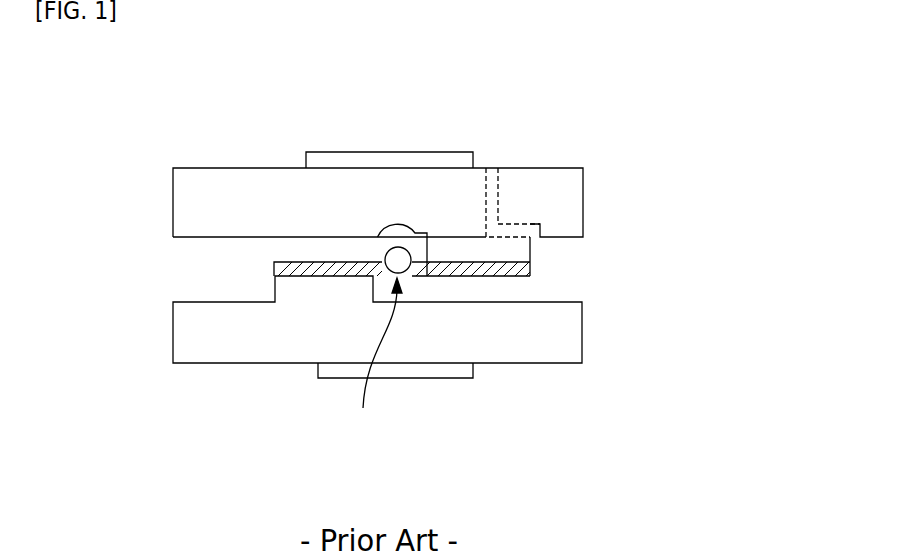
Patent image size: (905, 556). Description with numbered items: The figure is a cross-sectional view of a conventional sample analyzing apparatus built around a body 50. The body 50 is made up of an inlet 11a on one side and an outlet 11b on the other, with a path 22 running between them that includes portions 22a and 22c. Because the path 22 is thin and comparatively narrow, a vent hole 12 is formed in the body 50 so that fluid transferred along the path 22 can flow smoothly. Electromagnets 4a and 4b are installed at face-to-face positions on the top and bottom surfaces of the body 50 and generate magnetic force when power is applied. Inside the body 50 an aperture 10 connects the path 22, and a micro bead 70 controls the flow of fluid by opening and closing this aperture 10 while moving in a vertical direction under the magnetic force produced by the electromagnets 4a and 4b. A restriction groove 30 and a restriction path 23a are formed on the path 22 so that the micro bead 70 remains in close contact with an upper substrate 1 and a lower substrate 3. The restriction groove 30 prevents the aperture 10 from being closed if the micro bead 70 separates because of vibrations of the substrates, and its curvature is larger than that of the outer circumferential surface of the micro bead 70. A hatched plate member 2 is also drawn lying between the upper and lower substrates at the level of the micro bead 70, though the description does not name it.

The upper substrate 1 is at (190, 207).
The plate member 2 is at (527, 267).
The lower substrate 3 is at (187, 338).
The electromagnet 4a is at (457, 160).
The electromagnet 4b is at (427, 373).
The aperture 10 is at (376, 358).
The inlet 11a is at (193, 267).
The outlet 11b is at (563, 284).
The vent hole 12 is at (493, 187).
The path 22 is at (350, 248).
The path portion 22a is at (318, 248).
The path portion 22c is at (495, 285).
The restriction path 23a is at (432, 277).
The restriction groove 30 is at (398, 223).
The body 50 is at (140, 116).
The micro bead 70 is at (392, 252).